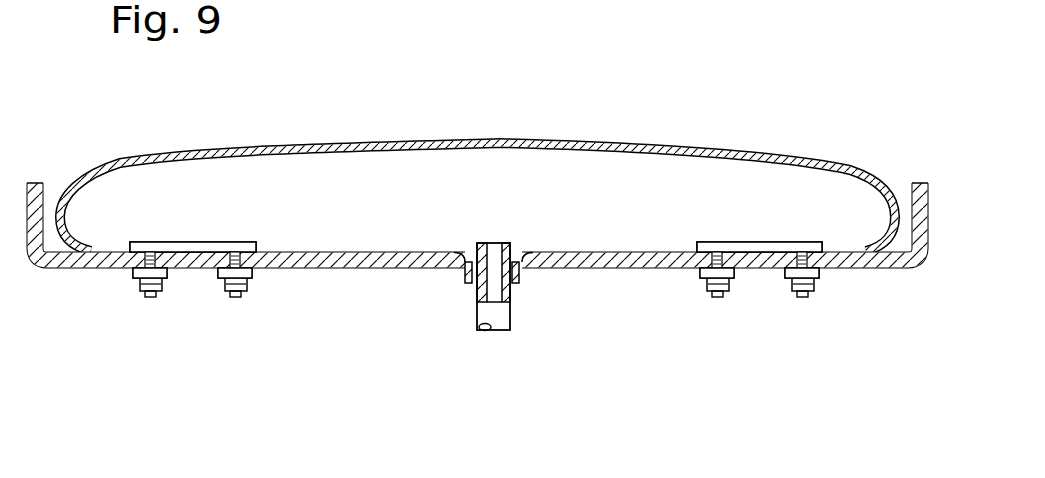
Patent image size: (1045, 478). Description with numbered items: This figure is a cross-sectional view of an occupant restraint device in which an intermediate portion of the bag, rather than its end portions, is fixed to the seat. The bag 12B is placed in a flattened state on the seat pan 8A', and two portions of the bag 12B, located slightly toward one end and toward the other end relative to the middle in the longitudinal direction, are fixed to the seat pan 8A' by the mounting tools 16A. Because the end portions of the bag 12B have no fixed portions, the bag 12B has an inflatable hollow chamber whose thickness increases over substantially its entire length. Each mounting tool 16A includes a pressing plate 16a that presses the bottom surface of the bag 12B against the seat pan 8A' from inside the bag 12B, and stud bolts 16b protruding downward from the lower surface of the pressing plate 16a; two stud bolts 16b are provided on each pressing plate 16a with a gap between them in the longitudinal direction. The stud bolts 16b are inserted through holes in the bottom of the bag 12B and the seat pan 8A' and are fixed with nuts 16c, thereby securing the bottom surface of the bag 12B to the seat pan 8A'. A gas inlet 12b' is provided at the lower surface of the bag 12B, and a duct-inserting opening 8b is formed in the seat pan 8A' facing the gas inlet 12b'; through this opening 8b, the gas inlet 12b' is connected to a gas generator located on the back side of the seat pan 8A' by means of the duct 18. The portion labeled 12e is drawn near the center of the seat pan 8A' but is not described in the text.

The bag 12B is at (696, 135).
The seat pan 8A' is at (243, 274).
The plate portion 12e is at (534, 250).
The duct-inserting opening 8b is at (462, 280).
The gas inlet 12b' is at (543, 306).
The duct 18 is at (474, 320).
The mounting tool 16A is at (138, 222).
The pressing plate 16a is at (230, 241).
The stud bolt 16b is at (150, 297).
The nut 16c is at (138, 284).